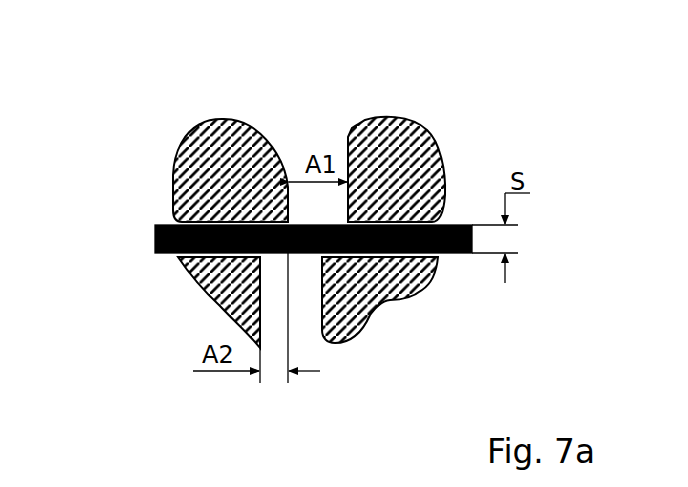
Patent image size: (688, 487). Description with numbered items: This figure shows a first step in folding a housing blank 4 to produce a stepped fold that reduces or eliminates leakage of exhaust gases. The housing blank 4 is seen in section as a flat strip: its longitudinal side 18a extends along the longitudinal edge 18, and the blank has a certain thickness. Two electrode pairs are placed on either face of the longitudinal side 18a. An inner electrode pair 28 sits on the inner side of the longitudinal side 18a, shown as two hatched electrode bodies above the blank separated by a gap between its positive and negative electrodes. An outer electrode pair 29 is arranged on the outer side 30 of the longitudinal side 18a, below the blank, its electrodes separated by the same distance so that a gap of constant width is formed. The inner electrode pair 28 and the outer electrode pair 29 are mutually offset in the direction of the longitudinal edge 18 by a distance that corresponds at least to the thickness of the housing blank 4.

The housing blank 4 is at (156, 225).
The longitudinal edge 18 is at (156, 238).
The longitudinal side 18a is at (171, 254).
The inner electrode pair 28 is at (377, 121).
The outer electrode pair 29 is at (262, 317).
The outer side 30 is at (453, 253).